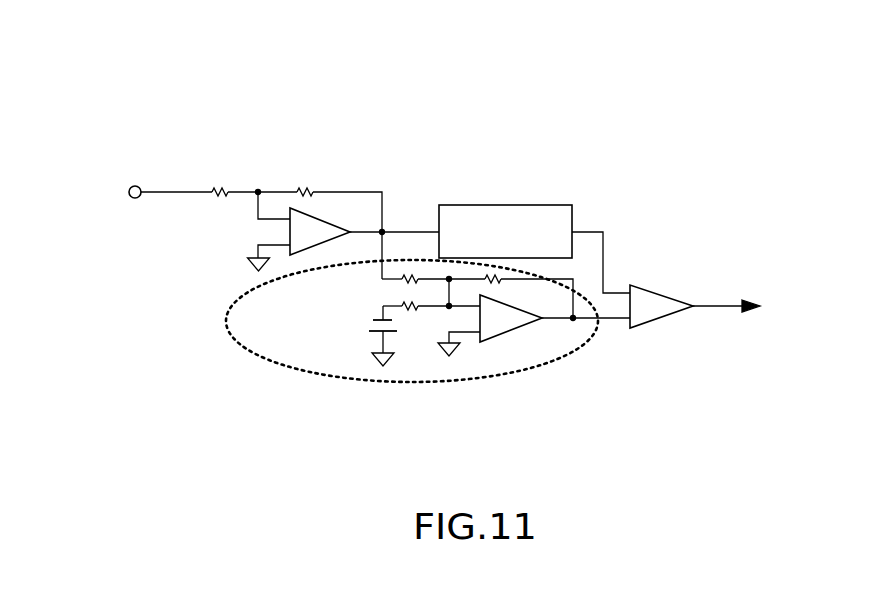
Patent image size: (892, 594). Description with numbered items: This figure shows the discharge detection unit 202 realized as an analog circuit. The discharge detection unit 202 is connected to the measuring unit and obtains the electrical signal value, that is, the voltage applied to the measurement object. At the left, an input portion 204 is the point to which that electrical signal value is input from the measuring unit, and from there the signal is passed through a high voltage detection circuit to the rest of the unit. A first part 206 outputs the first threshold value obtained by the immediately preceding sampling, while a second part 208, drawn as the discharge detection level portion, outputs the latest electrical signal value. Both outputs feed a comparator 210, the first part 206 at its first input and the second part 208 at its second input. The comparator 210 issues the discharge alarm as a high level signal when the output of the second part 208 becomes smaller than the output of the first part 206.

The discharge detection unit 202 is at (136, 68).
The input portion 204 is at (137, 185).
The first part 206 is at (503, 205).
The second part 208 is at (423, 382).
The comparator 210 is at (653, 321).